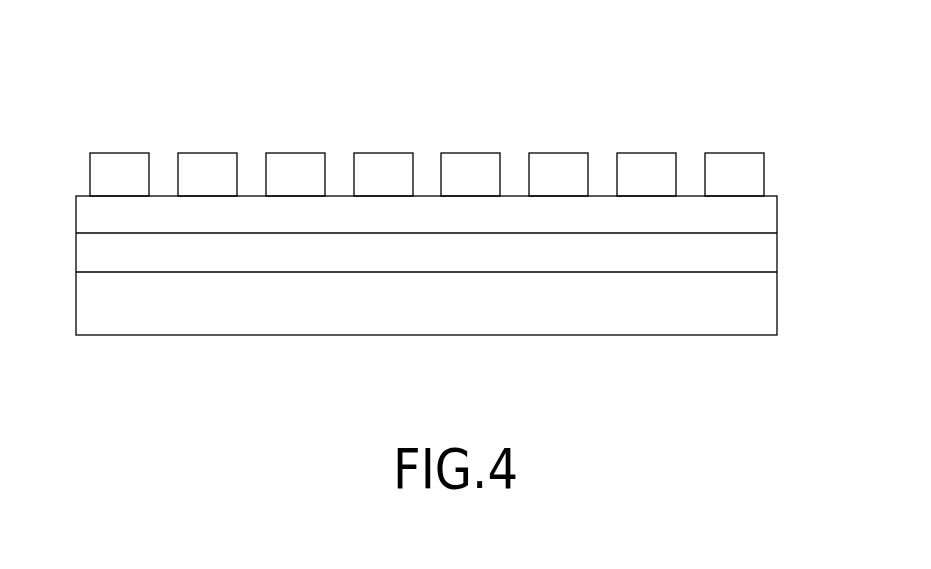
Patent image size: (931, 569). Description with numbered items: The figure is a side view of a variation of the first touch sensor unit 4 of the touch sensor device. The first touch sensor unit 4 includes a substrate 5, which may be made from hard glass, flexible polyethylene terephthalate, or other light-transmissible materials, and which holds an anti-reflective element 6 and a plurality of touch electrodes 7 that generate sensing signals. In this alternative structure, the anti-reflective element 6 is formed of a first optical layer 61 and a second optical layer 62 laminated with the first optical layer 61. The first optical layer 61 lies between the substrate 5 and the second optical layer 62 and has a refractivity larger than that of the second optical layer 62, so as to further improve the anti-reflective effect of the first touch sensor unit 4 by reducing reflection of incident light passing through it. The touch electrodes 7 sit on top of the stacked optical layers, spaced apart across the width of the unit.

The first touch sensor unit 4 is at (52, 53).
The substrate 5 is at (767, 297).
The anti-reflective element 6 is at (481, 239).
The first optical layer 61 is at (767, 253).
The second optical layer 62 is at (767, 215).
The touch electrodes 7 is at (120, 153).